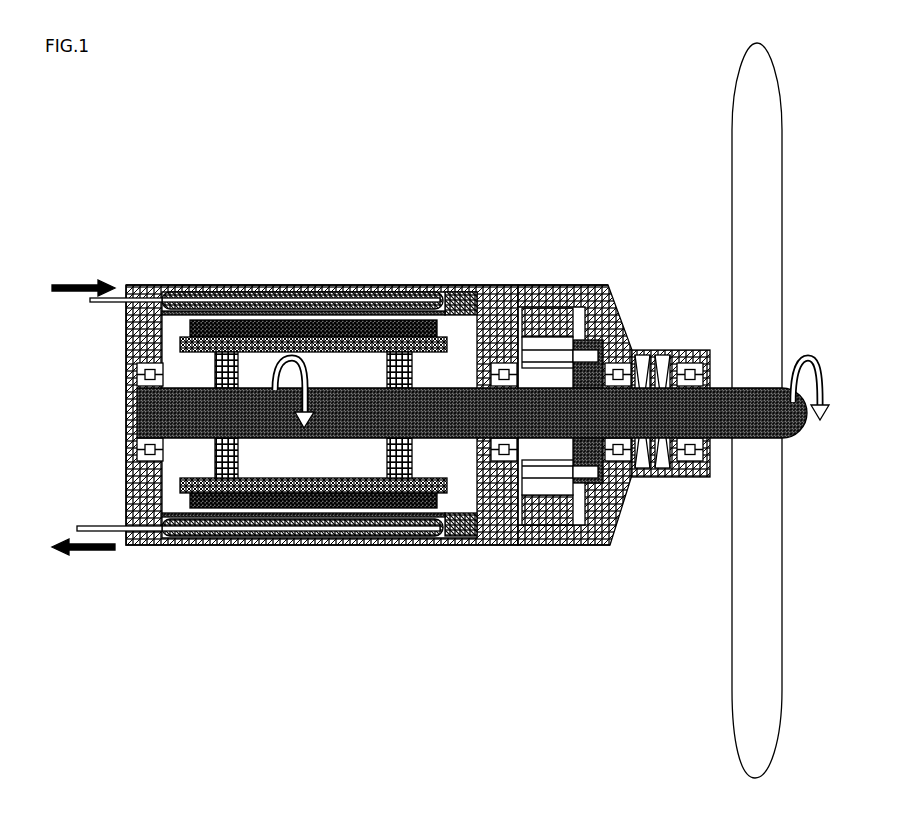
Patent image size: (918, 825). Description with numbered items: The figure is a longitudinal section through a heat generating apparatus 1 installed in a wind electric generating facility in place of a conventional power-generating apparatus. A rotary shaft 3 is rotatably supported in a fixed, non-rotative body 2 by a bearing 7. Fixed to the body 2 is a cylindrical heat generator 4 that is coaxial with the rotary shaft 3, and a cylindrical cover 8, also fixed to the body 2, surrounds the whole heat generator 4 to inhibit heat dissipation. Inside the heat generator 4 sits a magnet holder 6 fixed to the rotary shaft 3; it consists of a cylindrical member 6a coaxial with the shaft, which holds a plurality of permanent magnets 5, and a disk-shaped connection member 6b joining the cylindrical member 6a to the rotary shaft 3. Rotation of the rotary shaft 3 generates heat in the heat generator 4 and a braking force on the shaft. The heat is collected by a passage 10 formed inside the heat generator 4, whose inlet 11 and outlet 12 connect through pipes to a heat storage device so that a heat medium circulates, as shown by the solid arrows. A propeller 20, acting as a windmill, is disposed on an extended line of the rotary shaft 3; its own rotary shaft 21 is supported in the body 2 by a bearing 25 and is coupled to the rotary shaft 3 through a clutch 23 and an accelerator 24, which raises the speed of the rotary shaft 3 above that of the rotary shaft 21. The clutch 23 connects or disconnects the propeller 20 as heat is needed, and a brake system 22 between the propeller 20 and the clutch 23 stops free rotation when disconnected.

The heat generating apparatus 1 is at (181, 271).
The body 2 is at (133, 284).
The rotary shaft 3 is at (140, 400).
The heat generator 4 is at (245, 292).
The permanent magnets 5 is at (440, 332).
The magnet holder 6 is at (247, 408).
The cylindrical member 6a is at (180, 348).
The connection member 6b is at (215, 371).
The bearing 7 is at (127, 447).
The cover 8 is at (341, 285).
The passage 10 is at (274, 298).
The inlet 11 is at (90, 302).
The outlet 12 is at (77, 529).
The propeller 20 is at (737, 142).
The rotary shaft 21 is at (707, 352).
The brake system 22 is at (662, 352).
The clutch 23 is at (641, 355).
The accelerator 24 is at (547, 330).
The bearing 25 is at (609, 548).